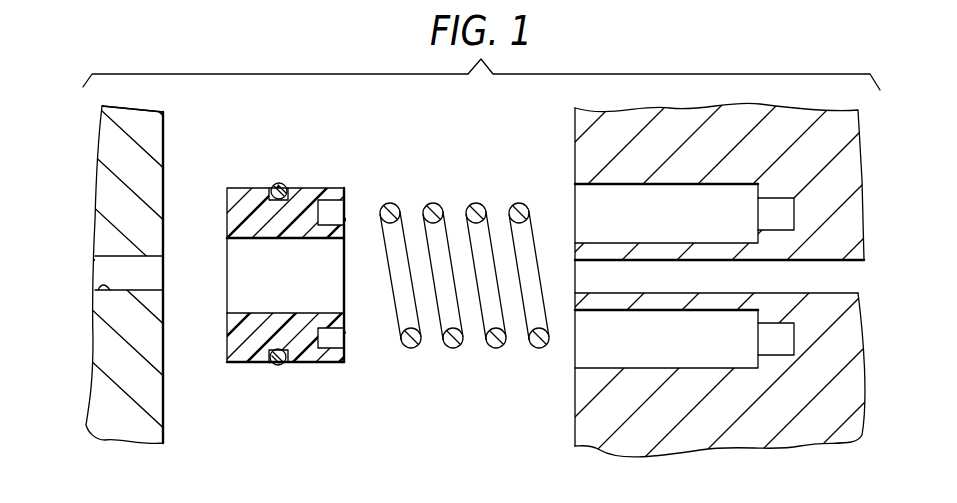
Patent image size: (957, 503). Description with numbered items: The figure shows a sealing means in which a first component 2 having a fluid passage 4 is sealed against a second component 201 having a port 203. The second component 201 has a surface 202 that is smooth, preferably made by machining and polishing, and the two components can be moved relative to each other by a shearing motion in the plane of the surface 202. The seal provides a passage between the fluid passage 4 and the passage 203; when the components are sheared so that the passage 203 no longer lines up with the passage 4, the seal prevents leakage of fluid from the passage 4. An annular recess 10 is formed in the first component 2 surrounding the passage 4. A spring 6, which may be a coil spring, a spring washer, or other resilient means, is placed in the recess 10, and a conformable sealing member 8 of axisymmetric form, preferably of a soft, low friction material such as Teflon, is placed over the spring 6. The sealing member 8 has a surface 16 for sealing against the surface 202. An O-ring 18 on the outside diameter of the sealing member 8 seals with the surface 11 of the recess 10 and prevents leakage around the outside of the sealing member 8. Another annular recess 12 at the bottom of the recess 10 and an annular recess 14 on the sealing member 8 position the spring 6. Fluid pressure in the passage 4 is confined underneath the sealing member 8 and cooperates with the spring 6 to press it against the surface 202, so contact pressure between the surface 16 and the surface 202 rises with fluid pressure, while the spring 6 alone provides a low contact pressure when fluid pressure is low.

The first component 2 is at (597, 290).
The fluid passage 4 is at (853, 293).
The spring 6 is at (472, 205).
The conformable sealing member 8 is at (285, 264).
The annular recess 10 is at (587, 202).
The surface of the recess 11 is at (587, 352).
The annular recess 12 is at (783, 216).
The annular recess 14 is at (333, 341).
The surface 16 is at (227, 213).
The O-ring 18 is at (275, 366).
The second component 201 is at (112, 147).
The surface 202 is at (165, 123).
The port 203 is at (97, 291).